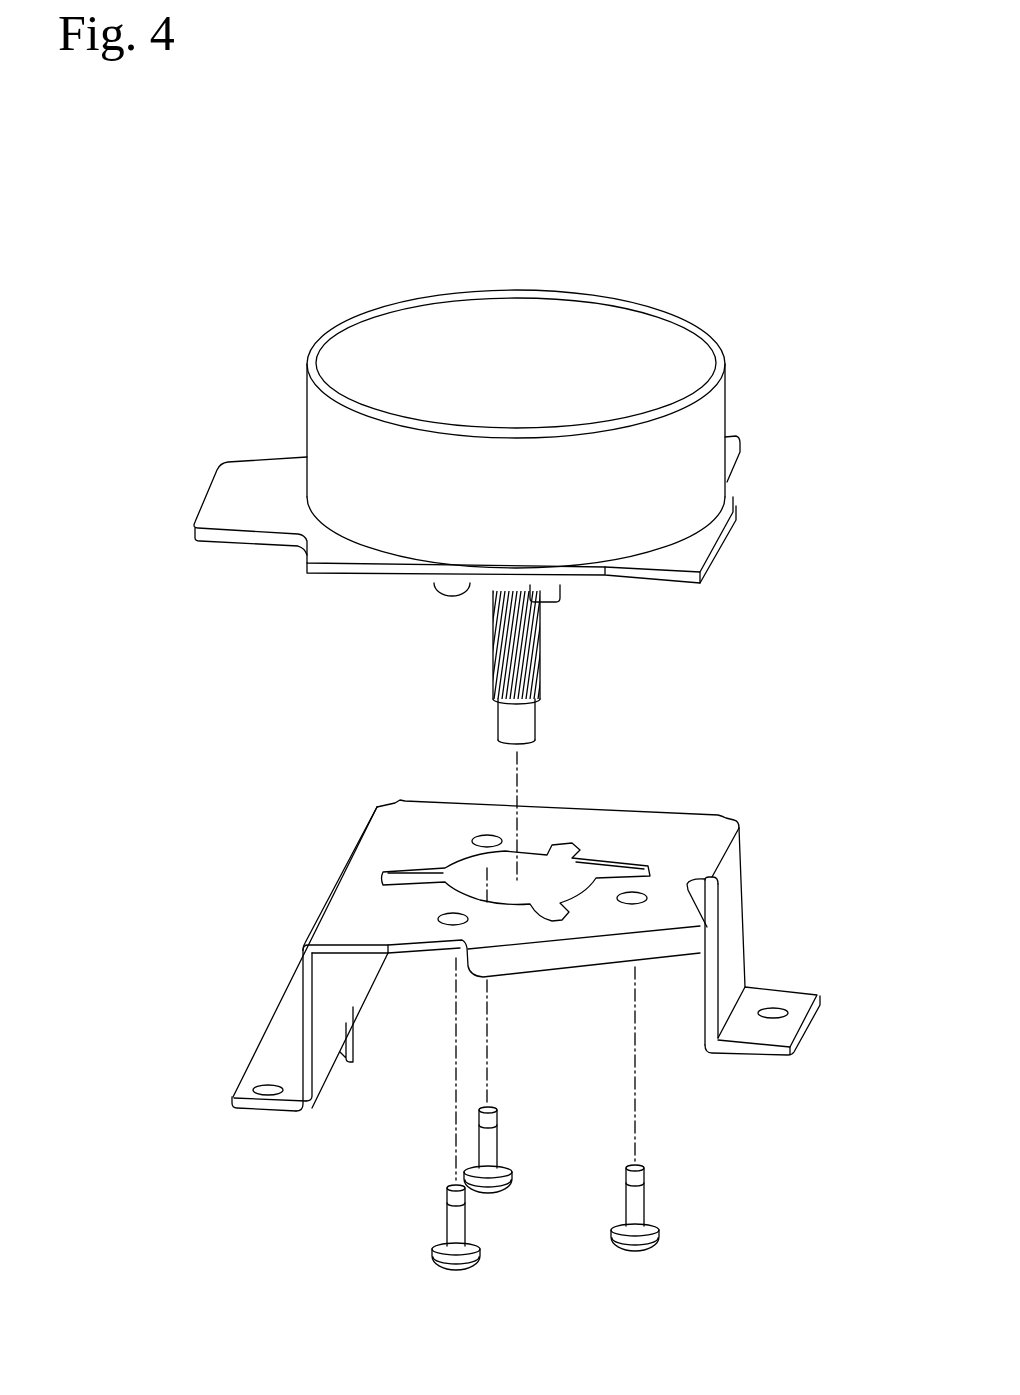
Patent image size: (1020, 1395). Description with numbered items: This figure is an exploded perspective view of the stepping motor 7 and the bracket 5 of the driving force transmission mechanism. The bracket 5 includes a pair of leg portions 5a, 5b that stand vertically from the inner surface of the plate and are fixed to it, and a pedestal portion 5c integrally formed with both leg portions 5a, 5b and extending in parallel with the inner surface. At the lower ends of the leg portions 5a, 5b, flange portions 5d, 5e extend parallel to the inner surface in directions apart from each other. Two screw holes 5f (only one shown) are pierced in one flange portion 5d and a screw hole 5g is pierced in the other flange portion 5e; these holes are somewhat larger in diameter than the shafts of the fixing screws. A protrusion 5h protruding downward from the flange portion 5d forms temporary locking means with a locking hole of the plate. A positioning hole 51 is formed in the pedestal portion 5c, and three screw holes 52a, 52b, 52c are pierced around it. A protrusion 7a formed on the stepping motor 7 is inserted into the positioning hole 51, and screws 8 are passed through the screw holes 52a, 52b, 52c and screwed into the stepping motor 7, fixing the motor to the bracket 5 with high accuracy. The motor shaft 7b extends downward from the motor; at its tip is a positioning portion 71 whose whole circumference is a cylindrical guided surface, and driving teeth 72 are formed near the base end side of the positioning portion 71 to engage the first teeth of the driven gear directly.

The stepping motor 7 is at (515, 310).
The protrusion 7a is at (547, 600).
The motor shaft 7b is at (500, 668).
The driving teeth 72 is at (528, 646).
The positioning portion 71 is at (528, 720).
The bracket 5 is at (522, 957).
The leg portion 5a is at (310, 997).
The leg portion 5b is at (737, 927).
The pedestal portion 5c is at (690, 824).
The flange portion 5d is at (275, 959).
The flange portion 5e is at (788, 996).
The screw hole 5f is at (266, 1089).
The screw hole 5g is at (770, 1012).
The protrusion 5h is at (342, 1064).
The positioning hole 51 is at (535, 845).
The screw hole 52a is at (453, 915).
The screw hole 52b is at (486, 836).
The screw hole 52c is at (633, 894).
The screws 8 is at (454, 1272).